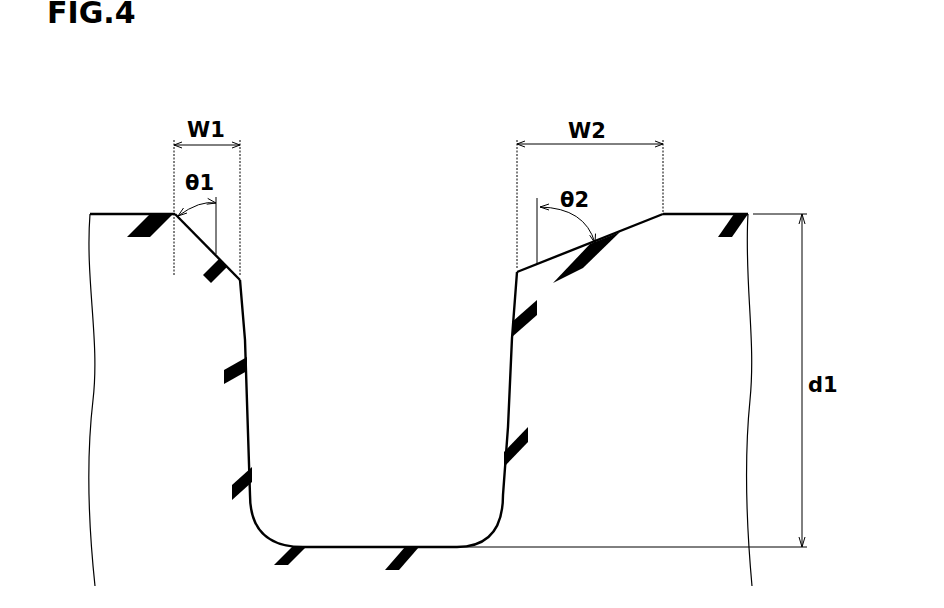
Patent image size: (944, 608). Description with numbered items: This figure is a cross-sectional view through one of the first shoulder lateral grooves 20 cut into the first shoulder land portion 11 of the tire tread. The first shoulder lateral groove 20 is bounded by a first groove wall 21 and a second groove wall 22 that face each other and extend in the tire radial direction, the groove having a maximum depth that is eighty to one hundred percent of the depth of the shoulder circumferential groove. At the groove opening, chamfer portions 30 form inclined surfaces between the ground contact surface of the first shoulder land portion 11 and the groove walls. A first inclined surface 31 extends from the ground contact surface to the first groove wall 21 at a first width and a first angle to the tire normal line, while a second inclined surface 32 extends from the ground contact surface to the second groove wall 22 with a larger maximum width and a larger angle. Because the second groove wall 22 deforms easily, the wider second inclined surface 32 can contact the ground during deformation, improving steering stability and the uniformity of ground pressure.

The first shoulder land portion 11 is at (112, 224).
The first shoulder lateral groove 20 is at (348, 408).
The first groove wall 21 is at (245, 338).
The second groove wall 22 is at (512, 338).
The chamfer portion 30 is at (641, 221).
The first inclined surface 31 is at (228, 265).
The second inclined surface 32 is at (617, 232).